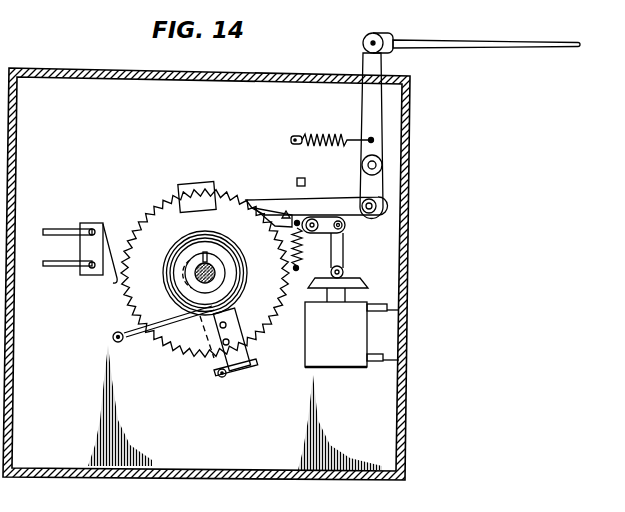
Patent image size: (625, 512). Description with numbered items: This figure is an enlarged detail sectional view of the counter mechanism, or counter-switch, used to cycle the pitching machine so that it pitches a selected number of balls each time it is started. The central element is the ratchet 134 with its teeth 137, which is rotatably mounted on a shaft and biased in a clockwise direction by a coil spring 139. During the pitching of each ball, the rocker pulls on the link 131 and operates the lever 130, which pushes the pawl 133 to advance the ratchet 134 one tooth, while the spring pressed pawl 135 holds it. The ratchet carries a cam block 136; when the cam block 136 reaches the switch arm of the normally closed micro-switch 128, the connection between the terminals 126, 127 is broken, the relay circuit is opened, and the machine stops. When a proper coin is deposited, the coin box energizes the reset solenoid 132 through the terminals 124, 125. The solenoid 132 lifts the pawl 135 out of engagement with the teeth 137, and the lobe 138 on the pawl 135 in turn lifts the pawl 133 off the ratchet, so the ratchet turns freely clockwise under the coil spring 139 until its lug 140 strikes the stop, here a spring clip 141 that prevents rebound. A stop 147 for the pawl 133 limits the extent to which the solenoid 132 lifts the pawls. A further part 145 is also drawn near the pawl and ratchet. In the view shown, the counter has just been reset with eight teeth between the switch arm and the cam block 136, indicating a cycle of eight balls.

The terminal 124 is at (388, 308).
The terminal 125 is at (384, 357).
The terminal 126 is at (53, 228).
The terminal 127 is at (53, 266).
The micro-switch 128 is at (102, 240).
The lever 130 is at (377, 107).
The link 131 is at (518, 46).
The reset solenoid 132 is at (345, 350).
The pawl 133 is at (379, 196).
The ratchet 134 is at (230, 223).
The spring pressed pawl 135 is at (277, 219).
The cam block 136 is at (192, 191).
The teeth 137 is at (281, 325).
The lobe 138 is at (288, 211).
The coil spring 139 is at (172, 288).
The lug 140 is at (233, 378).
The spring clip 141 is at (247, 366).
The guide 145 is at (210, 366).
The stop 147 is at (297, 178).